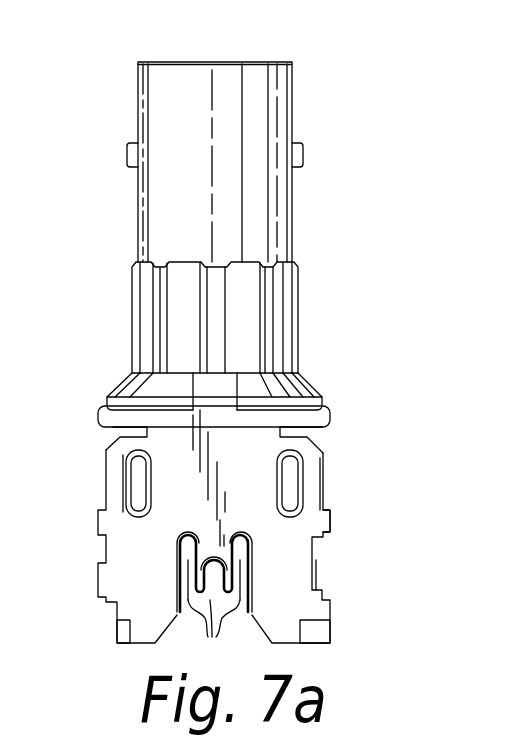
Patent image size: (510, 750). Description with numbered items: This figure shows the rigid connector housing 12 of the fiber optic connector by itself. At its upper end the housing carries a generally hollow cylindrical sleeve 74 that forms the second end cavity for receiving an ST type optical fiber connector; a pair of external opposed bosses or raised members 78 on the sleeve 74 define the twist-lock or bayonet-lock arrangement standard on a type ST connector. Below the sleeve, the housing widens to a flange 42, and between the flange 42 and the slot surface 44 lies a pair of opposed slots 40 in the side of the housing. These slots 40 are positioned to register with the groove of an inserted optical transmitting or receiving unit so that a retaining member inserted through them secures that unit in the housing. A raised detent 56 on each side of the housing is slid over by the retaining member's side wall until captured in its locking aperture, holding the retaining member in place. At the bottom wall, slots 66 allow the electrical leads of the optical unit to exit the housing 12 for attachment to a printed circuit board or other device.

The connector housing 12 is at (308, 362).
The cylindrical sleeve 74 is at (272, 92).
The bosses or raised members 78 is at (130, 152).
The flange 42 is at (100, 432).
The slot surface 44 is at (127, 428).
The slots 40 is at (290, 431).
The raised detent 56 is at (330, 522).
The slots 66 is at (214, 593).